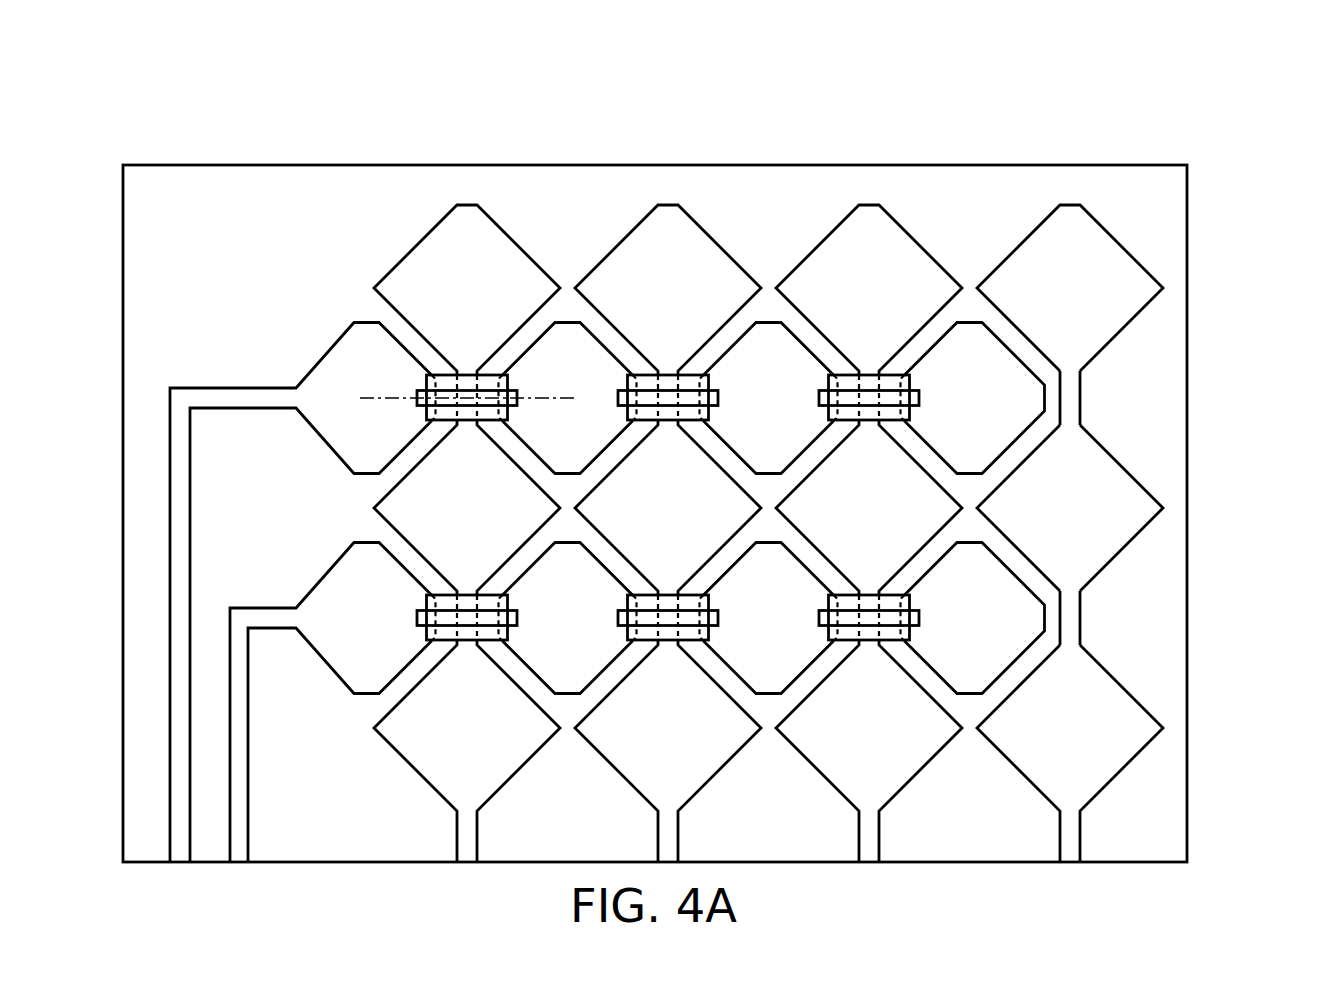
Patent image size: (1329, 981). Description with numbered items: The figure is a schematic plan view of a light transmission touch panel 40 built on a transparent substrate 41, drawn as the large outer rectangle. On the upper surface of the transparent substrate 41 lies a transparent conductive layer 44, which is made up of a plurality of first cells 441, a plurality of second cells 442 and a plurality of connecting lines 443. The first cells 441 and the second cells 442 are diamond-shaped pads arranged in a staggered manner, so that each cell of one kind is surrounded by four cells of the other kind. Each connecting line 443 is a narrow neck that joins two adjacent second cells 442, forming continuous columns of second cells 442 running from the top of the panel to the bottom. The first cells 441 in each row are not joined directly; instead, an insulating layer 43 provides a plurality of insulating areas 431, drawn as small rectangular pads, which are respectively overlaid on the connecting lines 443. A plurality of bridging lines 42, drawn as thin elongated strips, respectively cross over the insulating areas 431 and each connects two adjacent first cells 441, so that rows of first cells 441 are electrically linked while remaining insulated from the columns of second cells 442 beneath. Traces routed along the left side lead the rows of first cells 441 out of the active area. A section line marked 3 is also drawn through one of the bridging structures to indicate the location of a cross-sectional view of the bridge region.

The light transmission touch panel 40 is at (1196, 131).
The transparent substrate 41 is at (990, 165).
The bridging lines 42 is at (425, 388).
The insulating layer 43 is at (850, 93).
The insulating areas 431 is at (445, 375).
The transparent conductive layer 44 is at (1255, 177).
The first cells 441 is at (970, 337).
The second cells 442 is at (1122, 243).
The connecting lines 443 is at (1080, 397).
The section line of FIG. 3 is at (574, 398).